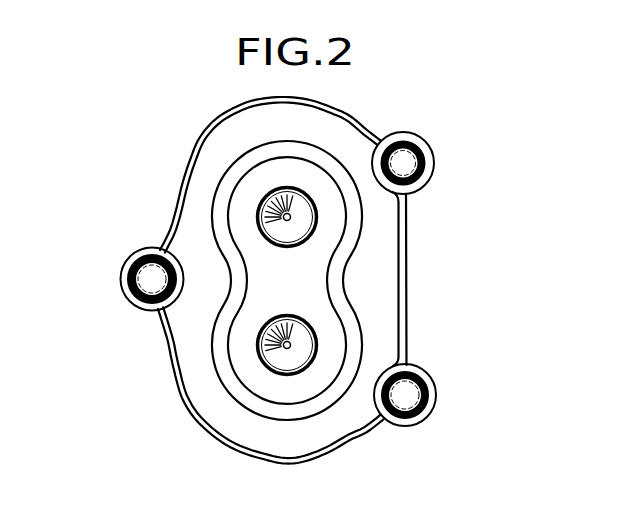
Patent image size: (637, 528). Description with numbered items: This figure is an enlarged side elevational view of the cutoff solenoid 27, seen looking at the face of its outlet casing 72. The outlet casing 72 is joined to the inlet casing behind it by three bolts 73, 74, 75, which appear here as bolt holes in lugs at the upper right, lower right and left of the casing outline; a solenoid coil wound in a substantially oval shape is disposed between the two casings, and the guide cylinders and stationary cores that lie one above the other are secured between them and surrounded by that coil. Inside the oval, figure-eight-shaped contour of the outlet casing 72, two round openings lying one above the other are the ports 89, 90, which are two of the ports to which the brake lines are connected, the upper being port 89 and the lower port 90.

The cutoff solenoid 27 is at (410, 262).
The outlet casing 72 is at (321, 131).
The bolt 73 is at (404, 162).
The bolt 74 is at (412, 393).
The bolt 75 is at (147, 278).
The port 89 is at (261, 207).
The port 90 is at (254, 352).